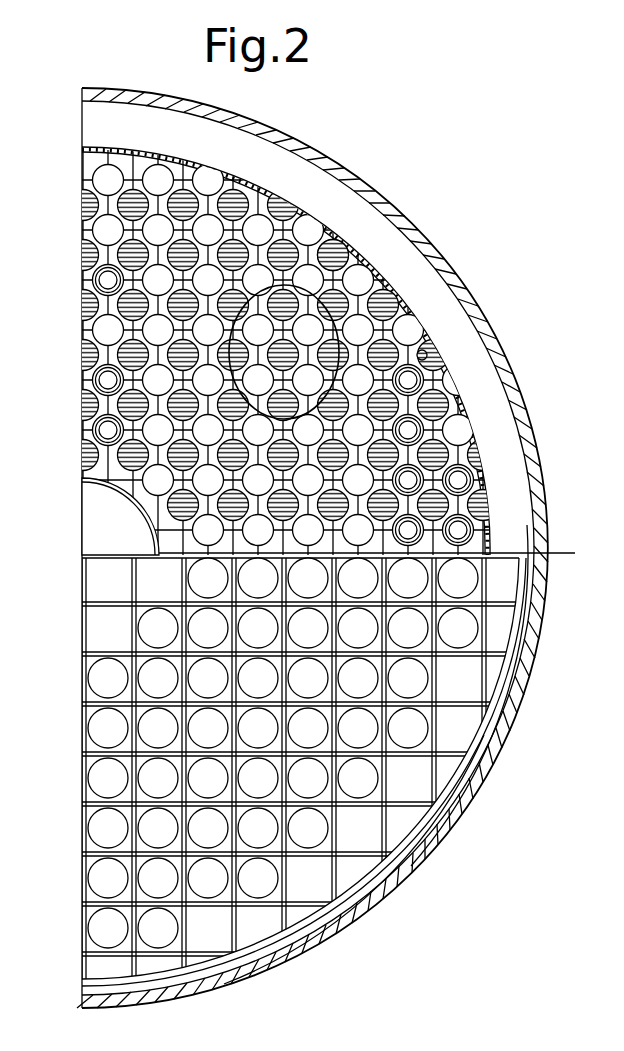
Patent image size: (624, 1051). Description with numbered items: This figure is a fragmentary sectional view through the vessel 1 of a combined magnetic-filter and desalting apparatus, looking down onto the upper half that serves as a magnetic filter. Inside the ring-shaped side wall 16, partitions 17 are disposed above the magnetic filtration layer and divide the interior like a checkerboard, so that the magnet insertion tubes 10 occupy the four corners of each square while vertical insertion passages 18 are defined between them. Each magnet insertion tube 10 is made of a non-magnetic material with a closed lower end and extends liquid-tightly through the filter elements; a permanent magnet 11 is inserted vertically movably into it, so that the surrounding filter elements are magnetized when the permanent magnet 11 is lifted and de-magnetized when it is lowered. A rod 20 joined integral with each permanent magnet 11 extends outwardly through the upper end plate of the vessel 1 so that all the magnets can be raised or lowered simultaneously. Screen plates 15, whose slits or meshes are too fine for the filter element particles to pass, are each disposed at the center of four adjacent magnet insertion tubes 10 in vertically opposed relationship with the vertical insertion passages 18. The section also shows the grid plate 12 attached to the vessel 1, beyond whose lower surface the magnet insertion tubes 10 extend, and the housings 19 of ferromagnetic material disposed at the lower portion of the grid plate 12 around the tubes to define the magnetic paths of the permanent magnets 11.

The vessel 1 is at (541, 540).
The magnet insertion tube 10 is at (210, 226).
The permanent magnet 11 is at (98, 283).
The grid plate 12 is at (420, 794).
The screen plate 15 is at (334, 250).
The ring-shaped side wall 16 is at (198, 162).
The partition 17 is at (92, 311).
The vertical insertion passage 18 is at (470, 511).
The housing 19 is at (428, 667).
The rod 20 is at (107, 293).